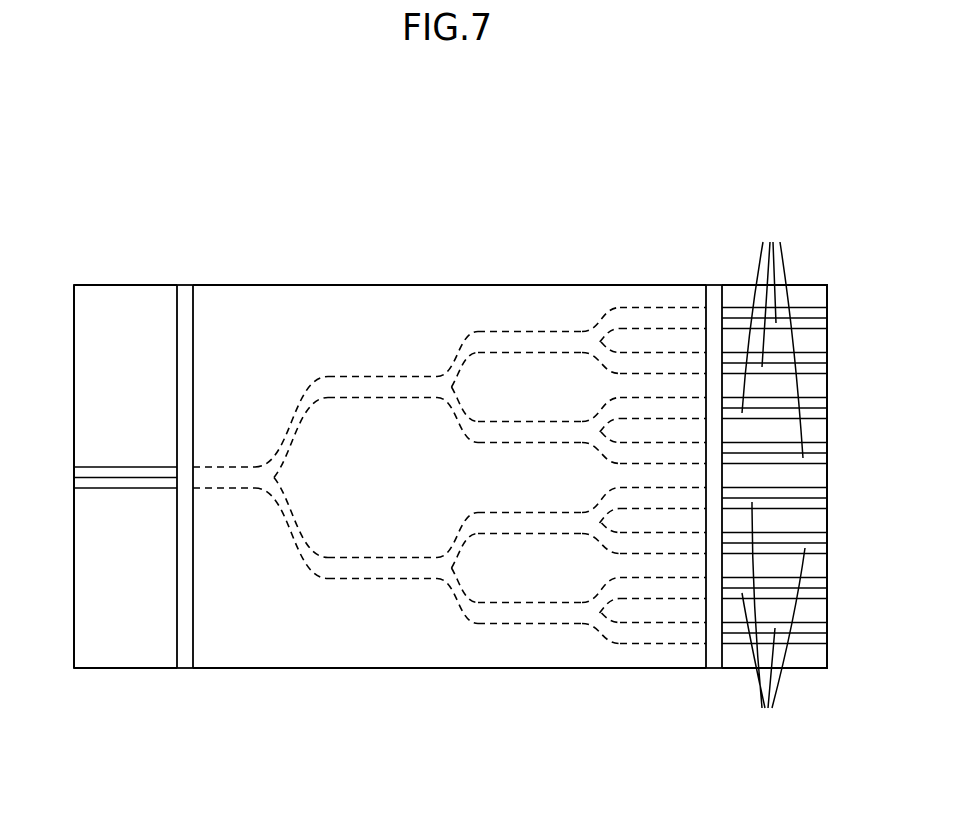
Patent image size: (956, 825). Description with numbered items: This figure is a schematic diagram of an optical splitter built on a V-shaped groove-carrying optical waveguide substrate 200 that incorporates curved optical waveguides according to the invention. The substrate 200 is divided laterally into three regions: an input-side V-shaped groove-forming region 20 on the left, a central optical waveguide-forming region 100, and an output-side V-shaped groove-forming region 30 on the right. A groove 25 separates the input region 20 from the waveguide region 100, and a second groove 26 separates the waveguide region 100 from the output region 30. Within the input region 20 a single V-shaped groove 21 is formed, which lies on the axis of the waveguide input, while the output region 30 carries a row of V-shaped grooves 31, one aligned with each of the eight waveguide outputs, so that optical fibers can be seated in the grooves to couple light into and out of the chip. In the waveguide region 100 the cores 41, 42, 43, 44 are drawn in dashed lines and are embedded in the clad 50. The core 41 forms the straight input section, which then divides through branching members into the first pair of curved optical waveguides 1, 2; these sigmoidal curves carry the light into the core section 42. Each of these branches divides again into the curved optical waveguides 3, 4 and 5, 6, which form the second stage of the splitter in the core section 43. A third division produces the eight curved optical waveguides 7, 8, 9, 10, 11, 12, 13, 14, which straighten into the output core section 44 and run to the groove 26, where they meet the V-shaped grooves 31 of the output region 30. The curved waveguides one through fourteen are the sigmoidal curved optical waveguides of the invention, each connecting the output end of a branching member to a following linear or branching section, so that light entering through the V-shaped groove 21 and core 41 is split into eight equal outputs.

The curved optical waveguide 1 is at (315, 363).
The curved optical waveguide 2 is at (255, 500).
The curved optical waveguide 3 is at (501, 350).
The curved optical waveguide 4 is at (503, 424).
The curved optical waveguide 5 is at (501, 530).
The curved optical waveguide 6 is at (503, 605).
The curved optical waveguide 7 is at (638, 314).
The curved optical waveguide 8 is at (635, 366).
The curved optical waveguide 9 is at (635, 407).
The curved optical waveguide 10 is at (629, 455).
The curved optical waveguide 11 is at (630, 499).
The curved optical waveguide 12 is at (630, 545).
The curved optical waveguide 13 is at (630, 586).
The curved optical waveguide 14 is at (631, 638).
The V-shaped groove-forming region 20 is at (180, 207).
The V-shaped groove 21 is at (123, 470).
The groove 25 is at (185, 655).
The groove 26 is at (713, 653).
The V-shaped groove-forming region 30 is at (835, 207).
The V-shaped groove 31 is at (773, 475).
The core 41 is at (217, 480).
The core 42 is at (375, 568).
The core 43 is at (517, 612).
The core 44 is at (643, 633).
The clad 50 is at (335, 635).
The optical waveguide-forming region 100 is at (193, 207).
The V-shaped groove-carrying optical waveguide substrate 200 is at (553, 113).